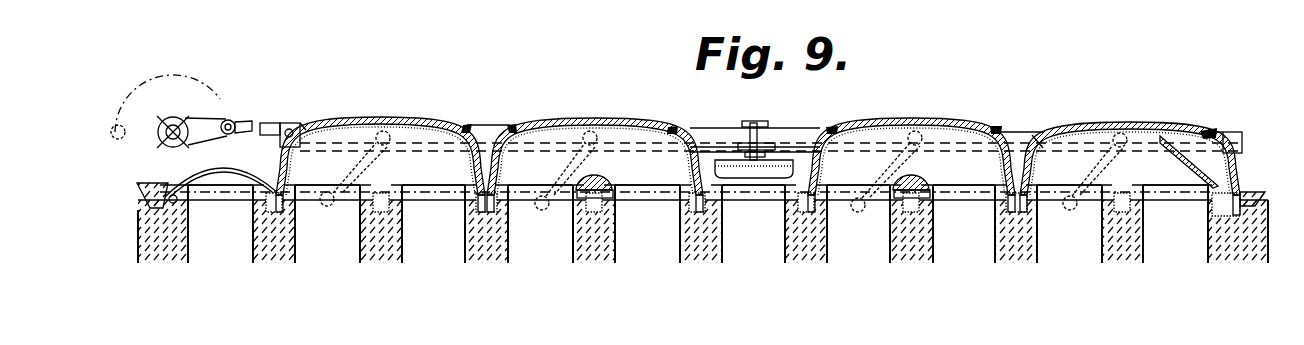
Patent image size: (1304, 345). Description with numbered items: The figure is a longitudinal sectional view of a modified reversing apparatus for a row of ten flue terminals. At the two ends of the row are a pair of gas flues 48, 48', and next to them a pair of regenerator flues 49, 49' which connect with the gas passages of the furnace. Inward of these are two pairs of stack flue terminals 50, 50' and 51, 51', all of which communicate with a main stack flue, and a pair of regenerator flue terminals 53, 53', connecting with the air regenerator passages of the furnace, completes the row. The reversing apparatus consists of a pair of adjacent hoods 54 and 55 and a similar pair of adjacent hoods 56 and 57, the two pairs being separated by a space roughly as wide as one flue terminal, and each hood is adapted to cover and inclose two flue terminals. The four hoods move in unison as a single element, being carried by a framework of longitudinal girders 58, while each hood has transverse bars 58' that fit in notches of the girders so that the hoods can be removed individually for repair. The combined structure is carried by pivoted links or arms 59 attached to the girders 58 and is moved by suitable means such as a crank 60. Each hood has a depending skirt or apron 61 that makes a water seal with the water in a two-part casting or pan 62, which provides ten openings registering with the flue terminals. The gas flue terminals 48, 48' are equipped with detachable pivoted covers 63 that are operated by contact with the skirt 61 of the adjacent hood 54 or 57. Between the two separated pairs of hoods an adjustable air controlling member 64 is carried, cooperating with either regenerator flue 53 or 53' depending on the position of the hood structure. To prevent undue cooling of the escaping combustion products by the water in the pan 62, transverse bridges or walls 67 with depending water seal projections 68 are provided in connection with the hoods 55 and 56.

The gas flue 48 is at (220, 224).
The gas flue 48' is at (1175, 224).
The regenerator flue 49 is at (327, 224).
The regenerator flue 49' is at (1069, 224).
The stack flue terminal 50 is at (433, 224).
The stack flue terminal 50' is at (964, 224).
The stack flue terminal 51 is at (540, 224).
The stack flue terminal 51' is at (858, 224).
The regenerator flue terminal 53 is at (647, 224).
The regenerator flue terminal 53' is at (753, 224).
The hood 54 is at (323, 124).
The hood 55 is at (550, 118).
The hood 56 is at (937, 125).
The hood 57 is at (1110, 138).
The longitudinal girder 58 is at (773, 124).
The transverse bar 58' is at (747, 107).
The pivoted link 59 is at (383, 128).
The crank 60 is at (200, 122).
The skirt 61 is at (285, 193).
The pan 62 is at (1253, 193).
The pivoted cover 63 is at (1207, 133).
The air controlling member 64 is at (723, 162).
The transverse bridge 67 is at (603, 172).
The water seal projection 68 is at (617, 200).